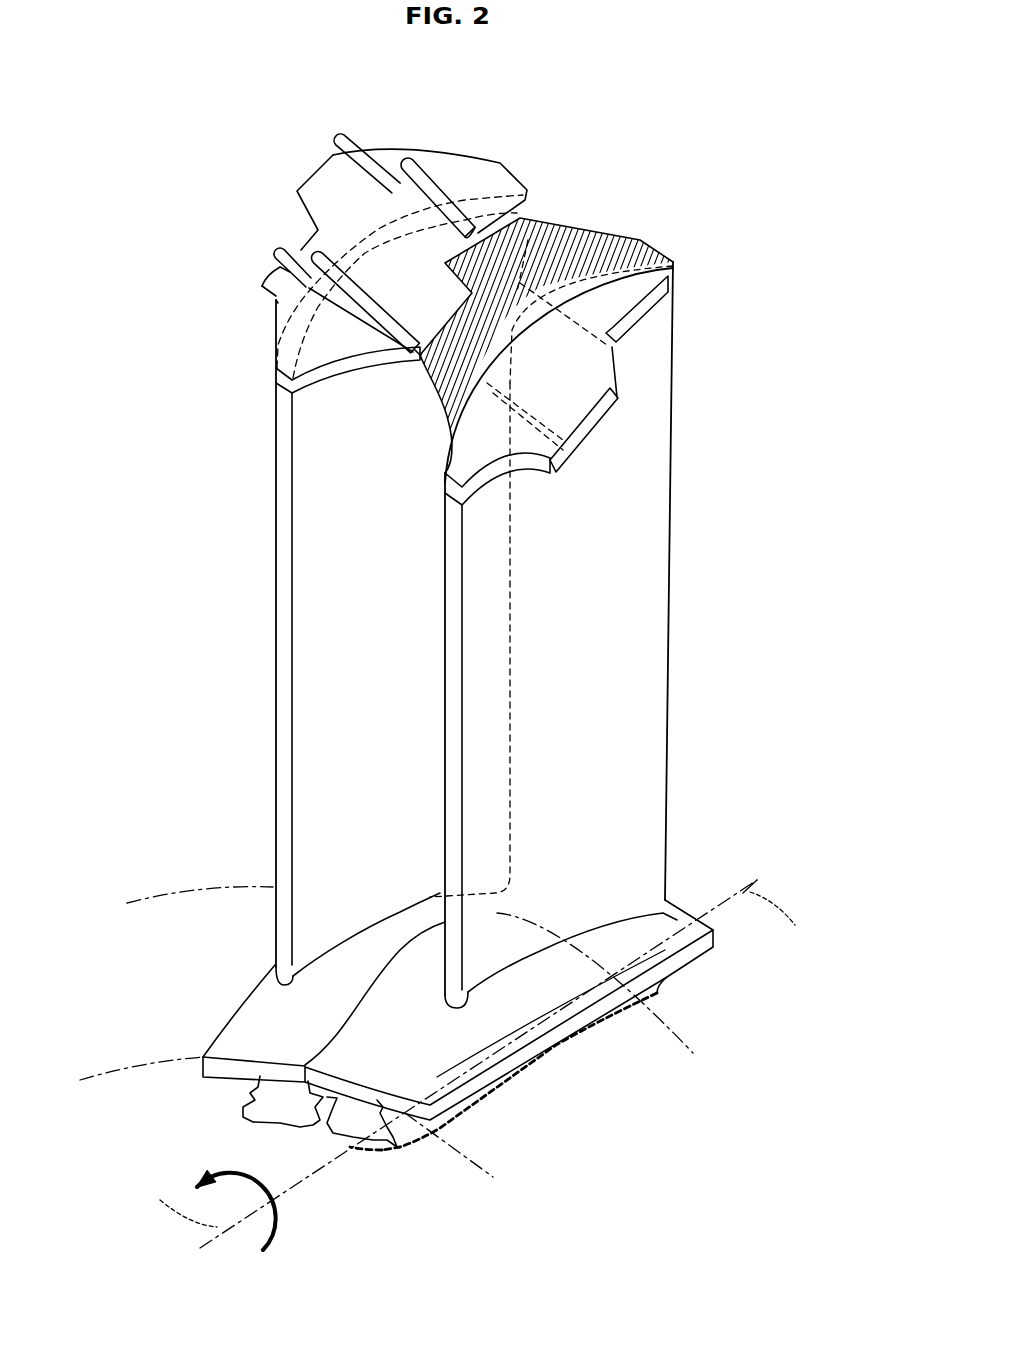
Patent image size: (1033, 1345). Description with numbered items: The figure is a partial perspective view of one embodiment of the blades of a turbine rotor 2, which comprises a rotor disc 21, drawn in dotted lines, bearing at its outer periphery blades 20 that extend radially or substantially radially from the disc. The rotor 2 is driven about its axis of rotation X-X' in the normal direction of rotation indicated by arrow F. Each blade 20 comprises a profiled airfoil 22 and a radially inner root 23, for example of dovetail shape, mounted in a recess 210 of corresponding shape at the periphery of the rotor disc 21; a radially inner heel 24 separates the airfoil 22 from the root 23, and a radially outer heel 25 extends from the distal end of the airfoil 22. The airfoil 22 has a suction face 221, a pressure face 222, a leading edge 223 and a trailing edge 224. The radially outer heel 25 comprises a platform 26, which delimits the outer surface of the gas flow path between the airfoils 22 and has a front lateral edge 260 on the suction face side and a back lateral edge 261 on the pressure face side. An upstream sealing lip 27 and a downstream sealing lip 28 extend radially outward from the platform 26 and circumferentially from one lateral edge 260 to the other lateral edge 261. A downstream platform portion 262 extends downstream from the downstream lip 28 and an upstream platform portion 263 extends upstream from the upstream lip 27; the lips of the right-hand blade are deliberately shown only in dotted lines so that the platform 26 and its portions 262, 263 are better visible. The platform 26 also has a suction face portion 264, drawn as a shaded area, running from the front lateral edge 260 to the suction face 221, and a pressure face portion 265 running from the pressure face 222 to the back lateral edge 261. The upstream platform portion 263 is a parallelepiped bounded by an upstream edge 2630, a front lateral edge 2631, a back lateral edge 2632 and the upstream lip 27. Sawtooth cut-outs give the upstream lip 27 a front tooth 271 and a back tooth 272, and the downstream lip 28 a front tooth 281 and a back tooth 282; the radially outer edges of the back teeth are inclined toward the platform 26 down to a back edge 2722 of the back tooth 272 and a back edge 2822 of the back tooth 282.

The rotor 2 is at (580, 167).
The blade 20 is at (258, 668).
The rotor disc 21 is at (590, 1101).
The profiled airfoil 22 is at (385, 679).
The root 23 is at (277, 1103).
The radially inner heel 24 is at (303, 1031).
The radially outer heel 25 is at (293, 150).
The platform 26 is at (407, 279).
The upstream sealing lip 27 is at (305, 250).
The downstream sealing lip 28 is at (382, 152).
The recess 210 is at (277, 1127).
The suction face 221 is at (312, 618).
The pressure face 222 is at (342, 667).
The leading edge 223 is at (447, 753).
The trailing edge 224 is at (668, 548).
The front lateral edge 260 is at (307, 178).
The back lateral edge 261 is at (645, 307).
The downstream platform portion 262 is at (460, 167).
The upstream platform portion 263 is at (290, 293).
The suction face portion 264 is at (588, 247).
The pressure face portion 265 is at (572, 368).
The front tooth 271 is at (280, 272).
The back tooth 272 is at (340, 293).
The front tooth 281 is at (335, 147).
The back tooth 282 is at (408, 193).
The upstream edge 2630 is at (287, 380).
The front lateral edge 2631 is at (277, 273).
The back lateral edge 2632 is at (550, 463).
The back edge 2722 is at (418, 372).
The back edge 2822 is at (472, 237).